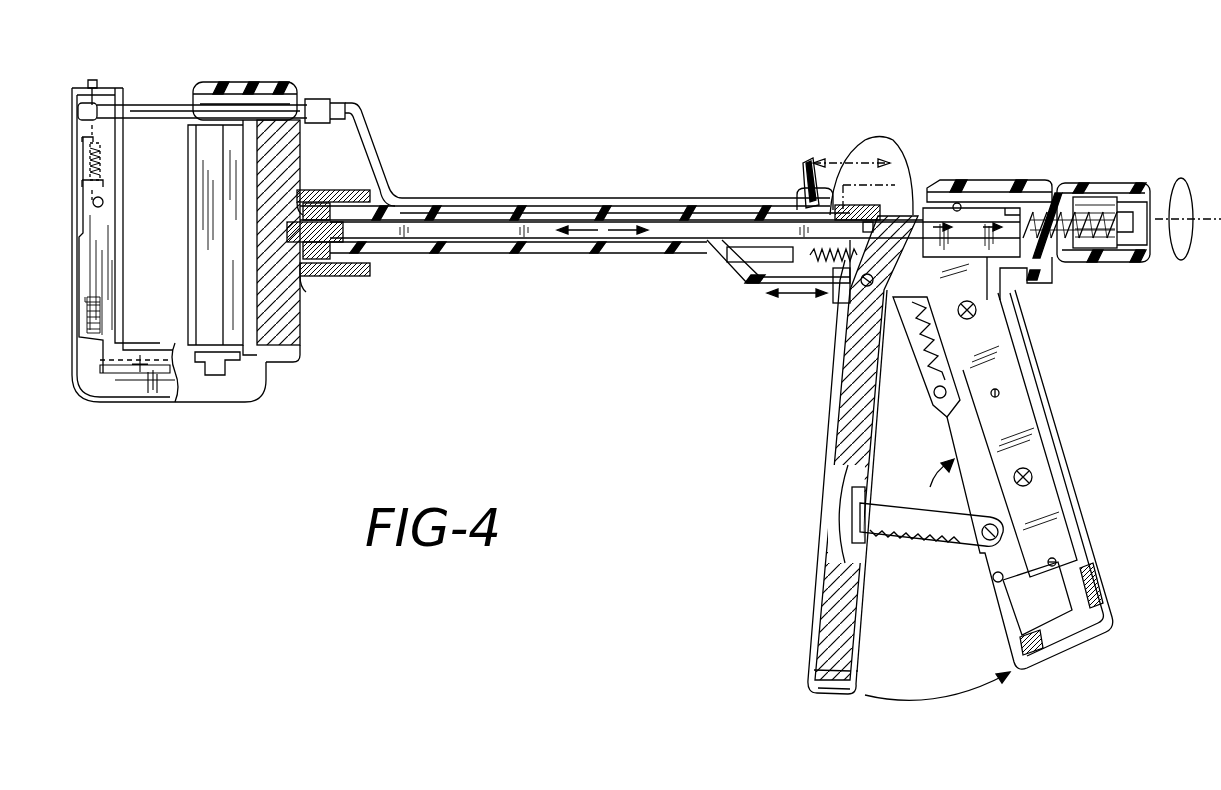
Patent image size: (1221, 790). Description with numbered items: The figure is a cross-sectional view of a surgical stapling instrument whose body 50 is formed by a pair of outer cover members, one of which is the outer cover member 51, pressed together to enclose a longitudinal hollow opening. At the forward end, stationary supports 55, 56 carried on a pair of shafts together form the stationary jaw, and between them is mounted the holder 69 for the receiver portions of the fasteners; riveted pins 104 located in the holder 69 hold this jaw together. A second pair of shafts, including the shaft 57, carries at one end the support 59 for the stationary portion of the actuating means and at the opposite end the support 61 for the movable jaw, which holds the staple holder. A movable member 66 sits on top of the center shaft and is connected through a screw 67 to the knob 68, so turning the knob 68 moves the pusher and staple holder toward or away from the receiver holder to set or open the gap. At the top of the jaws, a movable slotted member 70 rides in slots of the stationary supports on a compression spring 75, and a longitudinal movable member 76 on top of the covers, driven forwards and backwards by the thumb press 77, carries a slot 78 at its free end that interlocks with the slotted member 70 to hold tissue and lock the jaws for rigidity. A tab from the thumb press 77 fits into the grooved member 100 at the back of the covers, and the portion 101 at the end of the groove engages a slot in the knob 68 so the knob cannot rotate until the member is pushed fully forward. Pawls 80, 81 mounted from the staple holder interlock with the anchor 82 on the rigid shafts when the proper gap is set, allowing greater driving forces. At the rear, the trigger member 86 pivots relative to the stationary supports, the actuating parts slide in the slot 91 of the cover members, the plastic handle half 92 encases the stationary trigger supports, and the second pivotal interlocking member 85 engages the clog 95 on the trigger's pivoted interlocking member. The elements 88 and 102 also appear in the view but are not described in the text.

The body 50 is at (657, 190).
The outer cover member 51 is at (430, 210).
The stationary support 55 is at (220, 402).
The stationary support 56 is at (108, 400).
The shaft 57 is at (537, 235).
The support for stationary portion of actuating means 59 is at (1057, 520).
The support for movable jaw 61 is at (273, 152).
The movable member 66 is at (583, 210).
The screw 67 is at (1087, 240).
The knob 68 is at (1080, 186).
The holder 69 is at (107, 223).
The movable slotted member 70 is at (89, 80).
The compression spring 75 is at (110, 160).
The longitudinal movable member 76 is at (387, 180).
The thumb press 77 is at (792, 190).
The slot 78 is at (93, 110).
The pawl 80 is at (363, 179).
The pawl 81 is at (353, 278).
The anchor 82 is at (340, 213).
The second pivotal interlocking member 85 is at (947, 547).
The trigger member 86 is at (827, 593).
The handle end 88 is at (806, 681).
The slot 91 is at (1015, 268).
The plastic handle half 92 is at (1105, 581).
The clog 95 is at (912, 340).
The grooved member 100 is at (900, 158).
The portion 101 is at (1027, 187).
The breech body 102 is at (955, 216).
The riveted pins 104 is at (103, 200).